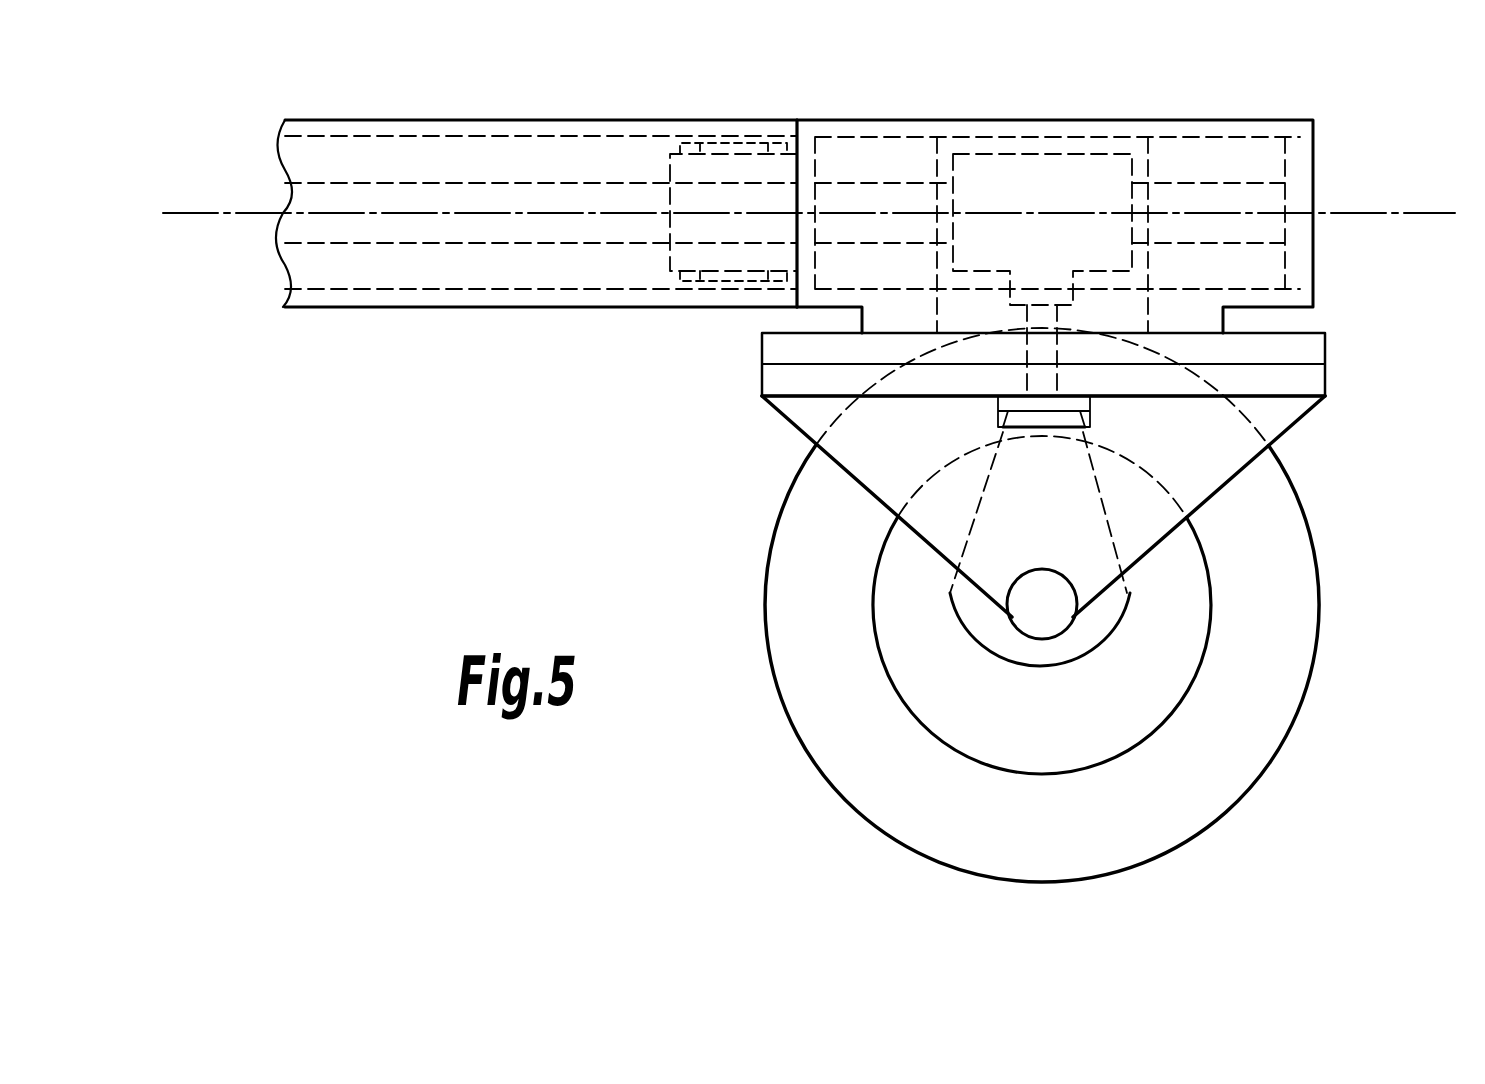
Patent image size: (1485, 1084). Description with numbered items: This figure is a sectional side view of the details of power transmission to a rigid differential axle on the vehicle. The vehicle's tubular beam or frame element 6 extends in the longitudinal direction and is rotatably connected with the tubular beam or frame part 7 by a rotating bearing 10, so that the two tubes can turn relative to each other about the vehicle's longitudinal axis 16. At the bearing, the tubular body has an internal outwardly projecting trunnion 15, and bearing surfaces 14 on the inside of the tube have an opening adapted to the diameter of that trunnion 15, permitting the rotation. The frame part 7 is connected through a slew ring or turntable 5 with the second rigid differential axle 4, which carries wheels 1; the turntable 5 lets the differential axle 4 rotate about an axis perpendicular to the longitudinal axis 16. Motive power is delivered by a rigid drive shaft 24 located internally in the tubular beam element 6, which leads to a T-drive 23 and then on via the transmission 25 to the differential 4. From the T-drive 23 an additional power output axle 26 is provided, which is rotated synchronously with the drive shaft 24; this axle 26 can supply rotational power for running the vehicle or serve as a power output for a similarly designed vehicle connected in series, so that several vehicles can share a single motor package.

The wheels 1 is at (1258, 683).
The second rigid differential axle 4 is at (1007, 640).
The turntable 5 is at (1300, 382).
The frame element 6 is at (470, 120).
The frame part 7 is at (1072, 120).
The rotating bearing 10 is at (781, 104).
The bearing surfaces 14 is at (697, 280).
The trunnion 15 is at (721, 172).
The longitudinal axis 16 is at (199, 212).
The T-drive 23 is at (1026, 234).
The drive shaft 24 is at (483, 241).
The transmission 25 is at (1043, 350).
The additional power output axle 26 is at (1208, 188).